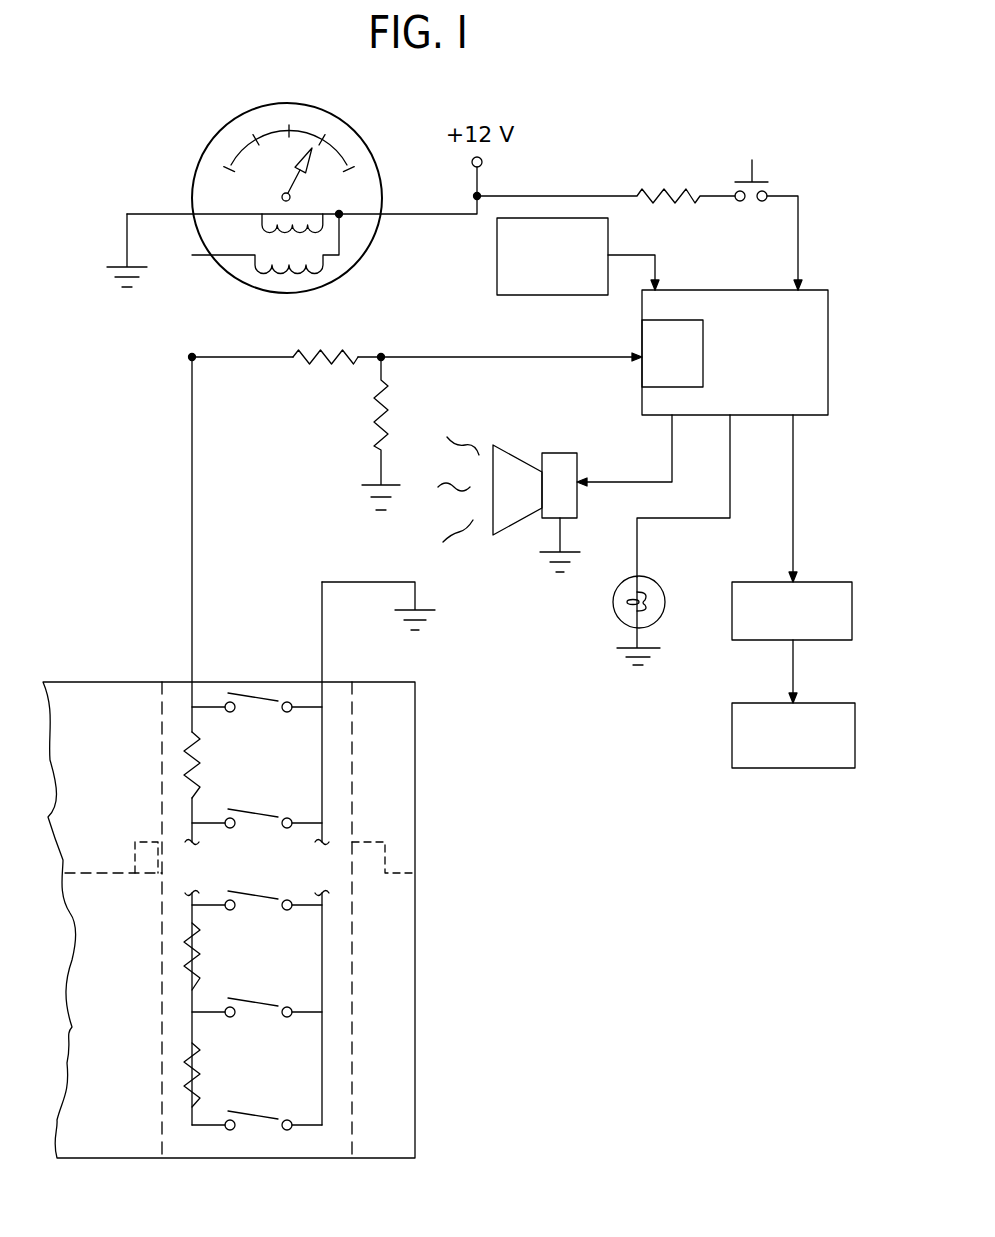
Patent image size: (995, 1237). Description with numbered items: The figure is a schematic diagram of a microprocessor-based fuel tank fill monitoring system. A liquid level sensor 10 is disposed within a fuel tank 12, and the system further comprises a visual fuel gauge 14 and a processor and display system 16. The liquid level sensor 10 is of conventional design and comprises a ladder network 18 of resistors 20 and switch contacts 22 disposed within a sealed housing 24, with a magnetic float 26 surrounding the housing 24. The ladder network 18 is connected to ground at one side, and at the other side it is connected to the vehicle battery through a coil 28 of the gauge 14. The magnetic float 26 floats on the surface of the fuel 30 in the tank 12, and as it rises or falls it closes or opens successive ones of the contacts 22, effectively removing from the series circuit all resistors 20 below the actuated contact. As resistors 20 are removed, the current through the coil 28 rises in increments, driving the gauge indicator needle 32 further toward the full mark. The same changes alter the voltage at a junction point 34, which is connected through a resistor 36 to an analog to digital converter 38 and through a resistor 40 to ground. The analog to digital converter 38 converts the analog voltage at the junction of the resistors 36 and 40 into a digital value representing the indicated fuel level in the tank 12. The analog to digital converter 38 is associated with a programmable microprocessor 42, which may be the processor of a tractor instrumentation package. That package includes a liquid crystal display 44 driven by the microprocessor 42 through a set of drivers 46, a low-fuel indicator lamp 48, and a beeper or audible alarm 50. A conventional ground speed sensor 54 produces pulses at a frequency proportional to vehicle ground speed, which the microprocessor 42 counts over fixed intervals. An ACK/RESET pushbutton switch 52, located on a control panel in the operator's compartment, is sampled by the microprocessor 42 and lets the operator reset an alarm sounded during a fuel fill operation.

The liquid level sensor 10 is at (368, 785).
The fuel tank 12 is at (415, 805).
The visual fuel gauge 14 is at (363, 253).
The processor and display system 16 is at (562, 633).
The ladder network 18 is at (335, 968).
The resistors 20 is at (191, 740).
The switch contacts 22 is at (268, 700).
The sealed housing 24 is at (352, 1050).
The magnetic float 26 is at (133, 842).
The coil 28 is at (287, 275).
The fuel 30 is at (108, 842).
The gauge indicator needle 32 is at (311, 170).
The junction point 34 is at (192, 357).
The resistor 36 is at (332, 355).
The analog to digital converter 38 is at (642, 330).
The resistor 40 is at (388, 400).
The programmable microprocessor 42 is at (700, 290).
The liquid crystal display 44 is at (815, 703).
The drivers 46 is at (822, 582).
The low-fuel indicator lamp 48 is at (660, 615).
The audible alarm 50 is at (520, 520).
The ACK/RESET pushbutton switch 52 is at (758, 172).
The ground speed sensor 54 is at (497, 290).